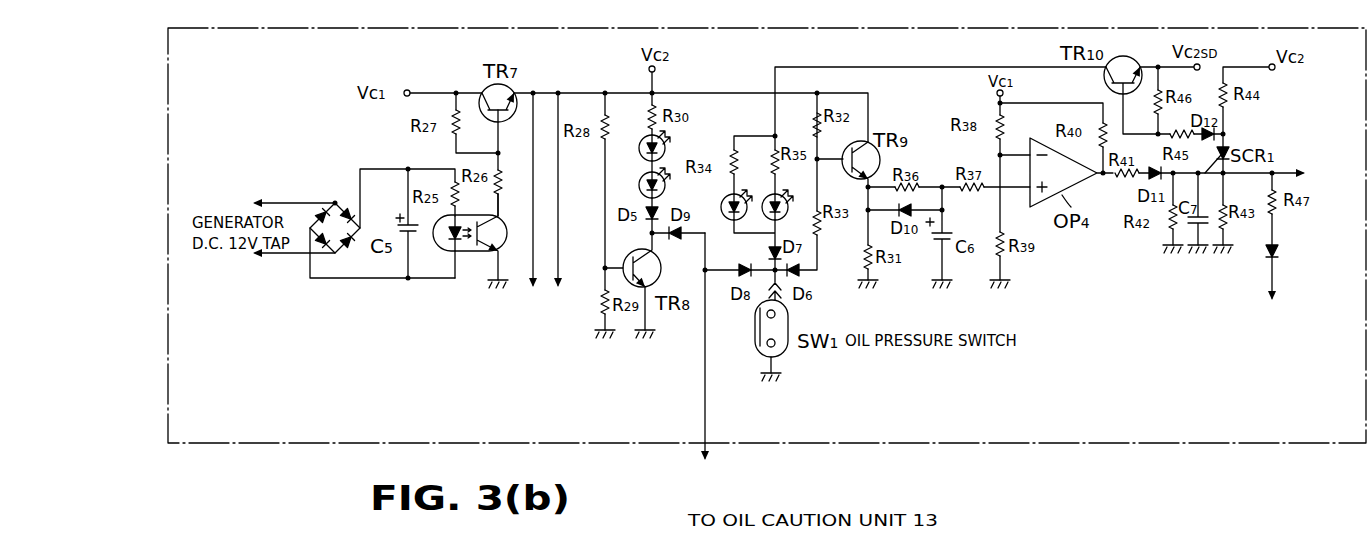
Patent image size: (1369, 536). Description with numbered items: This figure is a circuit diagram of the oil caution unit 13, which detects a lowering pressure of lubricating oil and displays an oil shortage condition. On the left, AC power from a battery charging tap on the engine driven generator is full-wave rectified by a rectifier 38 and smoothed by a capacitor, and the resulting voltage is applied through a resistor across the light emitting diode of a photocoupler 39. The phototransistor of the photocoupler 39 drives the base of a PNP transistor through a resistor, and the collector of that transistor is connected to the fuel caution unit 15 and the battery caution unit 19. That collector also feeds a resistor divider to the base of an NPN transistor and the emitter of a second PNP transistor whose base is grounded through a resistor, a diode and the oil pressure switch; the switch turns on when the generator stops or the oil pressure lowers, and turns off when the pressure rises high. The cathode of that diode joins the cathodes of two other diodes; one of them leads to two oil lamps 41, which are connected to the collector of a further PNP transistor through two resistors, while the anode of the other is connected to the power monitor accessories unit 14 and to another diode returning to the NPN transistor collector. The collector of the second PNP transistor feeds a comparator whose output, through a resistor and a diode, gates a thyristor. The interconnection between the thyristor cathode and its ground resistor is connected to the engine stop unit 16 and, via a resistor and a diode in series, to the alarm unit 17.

The oil caution unit 13 is at (772, 27).
The rectifier 38 is at (337, 198).
The photocoupler 39 is at (478, 257).
The oil lamps 41 is at (730, 222).
The power monitor accessories unit 14 is at (898, 360).
The fuel caution unit 15 is at (572, 263).
The engine stop unit 16 is at (1334, 120).
The alarm unit 17 is at (1274, 298).
The battery caution unit 19 is at (530, 265).